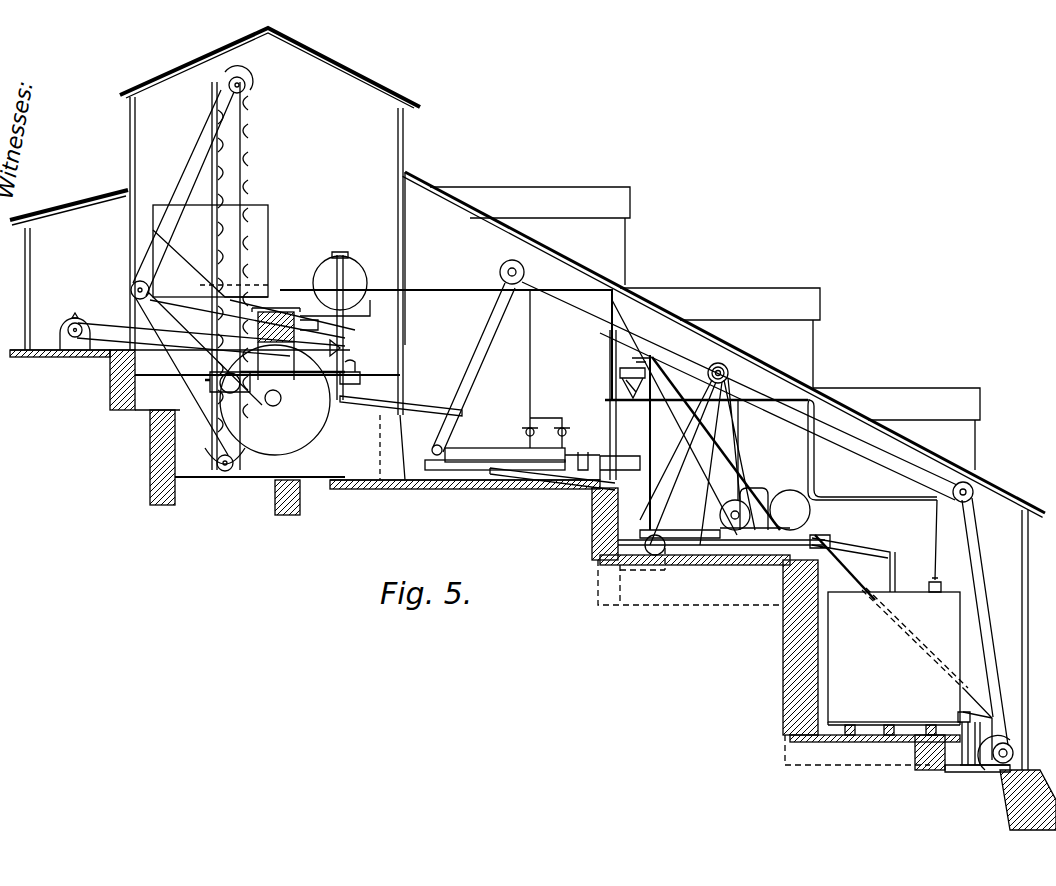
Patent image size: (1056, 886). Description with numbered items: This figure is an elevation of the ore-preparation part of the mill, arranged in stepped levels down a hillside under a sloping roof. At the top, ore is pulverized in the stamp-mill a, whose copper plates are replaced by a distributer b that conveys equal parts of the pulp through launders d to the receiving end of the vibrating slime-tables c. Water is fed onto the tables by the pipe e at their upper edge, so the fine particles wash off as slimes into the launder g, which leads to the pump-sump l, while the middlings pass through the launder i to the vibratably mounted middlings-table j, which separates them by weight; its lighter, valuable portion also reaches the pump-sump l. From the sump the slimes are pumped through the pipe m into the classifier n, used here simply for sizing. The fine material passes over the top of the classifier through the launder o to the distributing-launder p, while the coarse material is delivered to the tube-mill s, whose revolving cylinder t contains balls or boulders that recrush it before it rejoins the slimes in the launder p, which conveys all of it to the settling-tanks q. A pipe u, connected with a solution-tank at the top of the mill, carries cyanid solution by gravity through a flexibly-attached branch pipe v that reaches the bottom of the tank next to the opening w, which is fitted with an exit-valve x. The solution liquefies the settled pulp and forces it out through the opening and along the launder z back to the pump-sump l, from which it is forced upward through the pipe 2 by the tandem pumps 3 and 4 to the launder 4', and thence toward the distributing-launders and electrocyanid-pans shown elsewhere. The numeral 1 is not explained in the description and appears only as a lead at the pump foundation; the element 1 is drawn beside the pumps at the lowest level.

The stamp-mill a is at (345, 350).
The distributer b is at (366, 366).
The slime-tables c is at (468, 455).
The launders d is at (412, 402).
The pipe e is at (546, 369).
The launder g is at (535, 480).
The post h is at (586, 458).
The launder i is at (628, 458).
The middlings-table j is at (712, 540).
The pump-sump l is at (652, 558).
The pipe m is at (618, 412).
The classifier n is at (630, 362).
The launder o is at (700, 380).
The distributing-launder p is at (848, 548).
The settling-tanks q is at (894, 663).
The tube-mill s is at (798, 512).
The revolving cylinder t is at (790, 499).
The pipe u is at (872, 490).
The branch pipe v is at (929, 576).
The opening w is at (956, 716).
The exit-valve x is at (957, 743).
The launder z is at (958, 768).
The base bar 1 is at (970, 772).
The pipe 2 is at (975, 700).
The tandem pump 3 is at (1014, 752).
The tandem pump 4 is at (758, 490).
The launder 4' is at (611, 384).